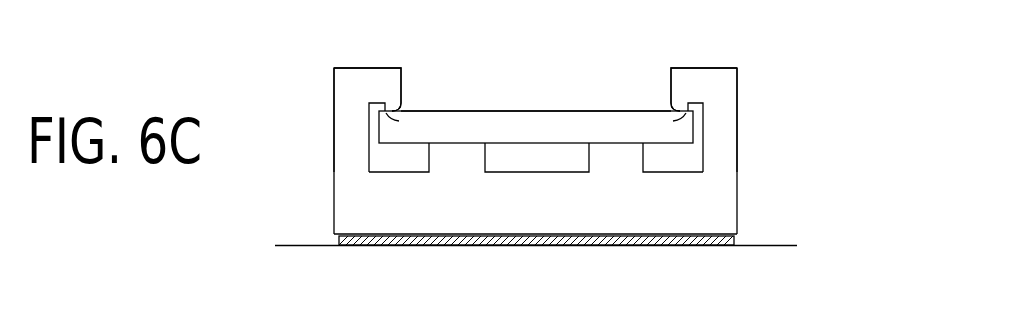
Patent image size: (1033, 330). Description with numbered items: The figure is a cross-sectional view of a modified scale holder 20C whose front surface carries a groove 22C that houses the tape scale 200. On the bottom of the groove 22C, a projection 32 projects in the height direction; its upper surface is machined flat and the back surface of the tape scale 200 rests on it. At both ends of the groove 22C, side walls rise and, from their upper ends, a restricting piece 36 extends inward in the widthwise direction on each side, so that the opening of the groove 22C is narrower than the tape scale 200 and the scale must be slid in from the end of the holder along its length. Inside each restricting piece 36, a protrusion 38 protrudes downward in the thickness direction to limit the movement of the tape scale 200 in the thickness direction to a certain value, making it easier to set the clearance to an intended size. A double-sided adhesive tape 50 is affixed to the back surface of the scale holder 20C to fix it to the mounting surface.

The scale holder 20C is at (738, 212).
The groove 22C is at (470, 108).
The projection 32 is at (425, 157).
The restricting piece 36 is at (390, 87).
The protrusion 38 is at (397, 110).
The double-sided adhesive tape 50 is at (679, 247).
The tape scale 200 is at (537, 110).